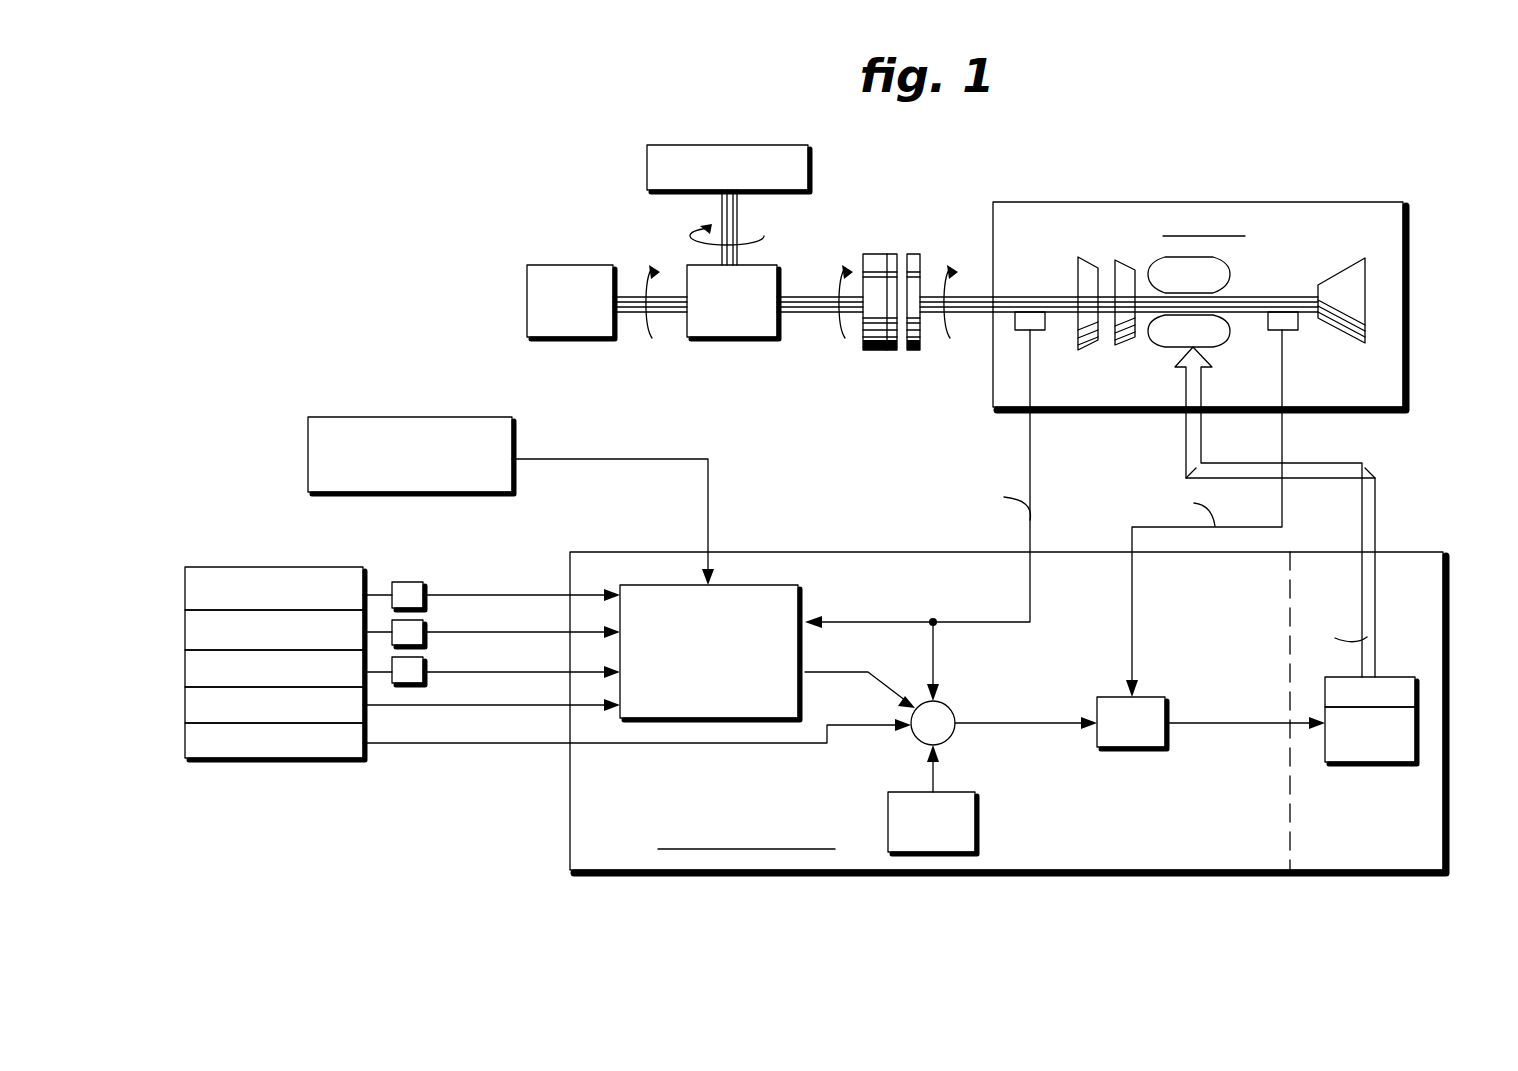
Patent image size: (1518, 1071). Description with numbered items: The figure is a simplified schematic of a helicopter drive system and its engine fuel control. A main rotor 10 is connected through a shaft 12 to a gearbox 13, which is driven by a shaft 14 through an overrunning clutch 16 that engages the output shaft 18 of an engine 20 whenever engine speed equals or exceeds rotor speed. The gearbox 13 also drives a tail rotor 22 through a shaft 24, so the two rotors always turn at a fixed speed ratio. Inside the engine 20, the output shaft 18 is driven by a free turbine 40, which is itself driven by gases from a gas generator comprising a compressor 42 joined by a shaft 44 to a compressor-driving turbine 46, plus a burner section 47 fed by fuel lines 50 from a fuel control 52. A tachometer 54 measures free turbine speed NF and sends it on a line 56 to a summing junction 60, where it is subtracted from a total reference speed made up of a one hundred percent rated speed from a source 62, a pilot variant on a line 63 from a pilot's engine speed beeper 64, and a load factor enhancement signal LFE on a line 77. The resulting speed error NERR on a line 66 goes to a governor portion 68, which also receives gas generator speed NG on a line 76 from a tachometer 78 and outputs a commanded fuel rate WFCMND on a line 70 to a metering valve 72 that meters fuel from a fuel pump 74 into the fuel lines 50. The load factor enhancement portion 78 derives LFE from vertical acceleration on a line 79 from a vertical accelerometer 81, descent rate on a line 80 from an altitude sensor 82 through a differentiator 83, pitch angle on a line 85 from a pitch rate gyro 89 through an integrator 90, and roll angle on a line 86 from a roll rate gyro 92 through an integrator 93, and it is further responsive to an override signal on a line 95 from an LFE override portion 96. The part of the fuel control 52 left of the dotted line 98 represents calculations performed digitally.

The main rotor 10 is at (665, 145).
The shaft 12 is at (738, 210).
The gearbox 13 is at (748, 338).
The shaft 14 is at (793, 298).
The overrunning clutch 16 is at (876, 254).
The output shaft 18 is at (980, 298).
The engine 20 is at (1292, 197).
The tail rotor 22 is at (588, 265).
The shaft 24 is at (628, 298).
The free turbine 40 is at (1090, 268).
The compressor 42 is at (1357, 268).
The shaft 44 is at (1245, 298).
The compressor-driving turbine 46 is at (1135, 336).
The burner section 47 is at (1210, 347).
The fuel lines 50 is at (1186, 452).
The fuel control 52 is at (1412, 543).
The tachometer 54 is at (1038, 322).
The line 56 is at (1030, 498).
The summing junction 60 is at (922, 744).
The source 62 is at (950, 792).
The line 63 is at (498, 743).
The pilot's engine speed beeper 64 is at (185, 747).
The line 66 is at (963, 712).
The governor portion 68 is at (1137, 749).
The line 70 is at (1205, 727).
The metering valve 72 is at (1385, 677).
The fuel pump 74 is at (1332, 762).
The line 76 is at (1282, 518).
The line 77 is at (812, 677).
The load factor enhancement portion 78 is at (1292, 323).
The line 79 is at (498, 705).
The line 80 is at (498, 672).
The vertical accelerometer 81 is at (185, 710).
The altitude sensor 82 is at (185, 672).
The differentiator 83 is at (425, 658).
The line 85 is at (498, 632).
The line 86 is at (498, 595).
The pitch rate gyro 89 is at (185, 635).
The integrator 90 is at (424, 621).
The roll rate gyro 92 is at (185, 597).
The integrator 93 is at (405, 582).
The line 95 is at (708, 459).
The LFE override portion 96 is at (400, 417).
The dotted line 98 is at (1292, 833).